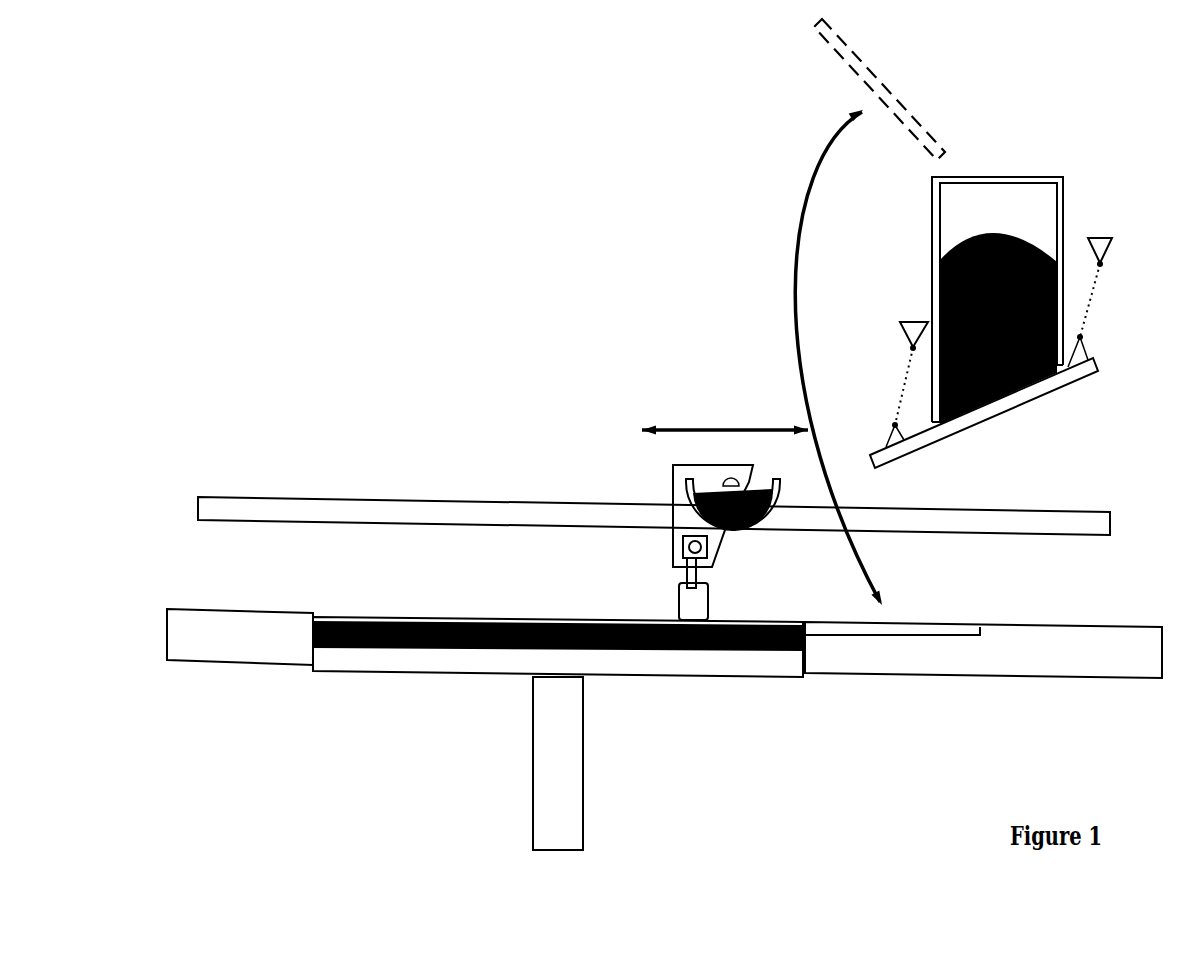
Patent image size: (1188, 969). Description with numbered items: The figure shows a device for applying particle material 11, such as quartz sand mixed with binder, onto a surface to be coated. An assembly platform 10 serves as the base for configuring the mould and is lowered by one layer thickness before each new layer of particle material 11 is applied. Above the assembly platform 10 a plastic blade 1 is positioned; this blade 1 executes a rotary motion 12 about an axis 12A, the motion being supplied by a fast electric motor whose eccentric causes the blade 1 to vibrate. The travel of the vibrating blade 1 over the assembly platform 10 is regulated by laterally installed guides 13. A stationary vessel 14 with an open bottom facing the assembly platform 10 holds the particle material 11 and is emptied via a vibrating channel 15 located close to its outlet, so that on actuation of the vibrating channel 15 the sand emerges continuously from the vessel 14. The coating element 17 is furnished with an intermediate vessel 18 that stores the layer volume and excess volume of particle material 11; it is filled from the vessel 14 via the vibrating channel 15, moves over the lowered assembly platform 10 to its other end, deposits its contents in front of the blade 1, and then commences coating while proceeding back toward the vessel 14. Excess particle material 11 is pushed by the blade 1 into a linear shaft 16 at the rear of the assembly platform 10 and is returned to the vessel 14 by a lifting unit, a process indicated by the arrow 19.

The plastic blade 1 is at (695, 610).
The assembly platform 10 is at (445, 660).
The particle material 11 is at (1002, 272).
The rotary motion 12 is at (677, 647).
The axis 12A is at (677, 582).
The guides 13 is at (433, 515).
The stationary vessel 14 is at (1033, 256).
The vibrating channel 15 is at (1028, 389).
The linear shaft 16 is at (983, 688).
The coating element 17 is at (630, 460).
The intermediate vessel 18 is at (755, 528).
The arrow 19 is at (795, 265).